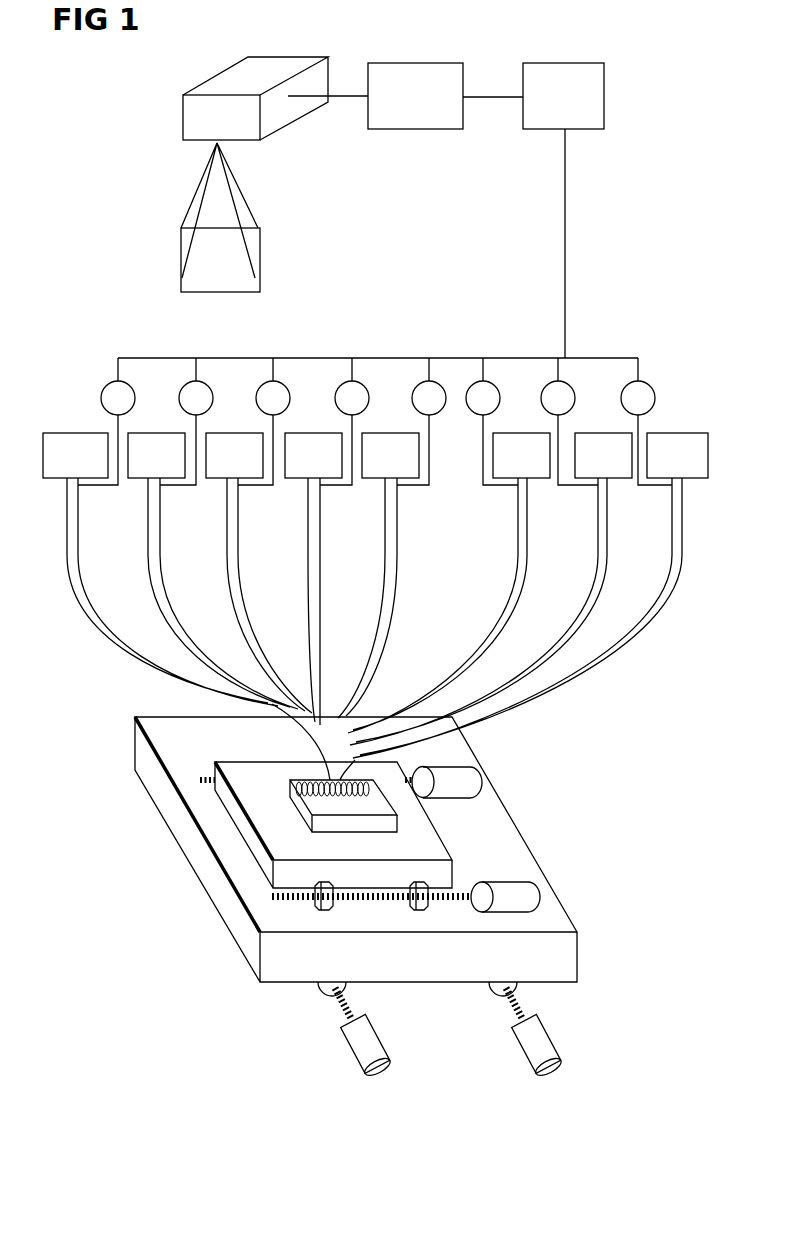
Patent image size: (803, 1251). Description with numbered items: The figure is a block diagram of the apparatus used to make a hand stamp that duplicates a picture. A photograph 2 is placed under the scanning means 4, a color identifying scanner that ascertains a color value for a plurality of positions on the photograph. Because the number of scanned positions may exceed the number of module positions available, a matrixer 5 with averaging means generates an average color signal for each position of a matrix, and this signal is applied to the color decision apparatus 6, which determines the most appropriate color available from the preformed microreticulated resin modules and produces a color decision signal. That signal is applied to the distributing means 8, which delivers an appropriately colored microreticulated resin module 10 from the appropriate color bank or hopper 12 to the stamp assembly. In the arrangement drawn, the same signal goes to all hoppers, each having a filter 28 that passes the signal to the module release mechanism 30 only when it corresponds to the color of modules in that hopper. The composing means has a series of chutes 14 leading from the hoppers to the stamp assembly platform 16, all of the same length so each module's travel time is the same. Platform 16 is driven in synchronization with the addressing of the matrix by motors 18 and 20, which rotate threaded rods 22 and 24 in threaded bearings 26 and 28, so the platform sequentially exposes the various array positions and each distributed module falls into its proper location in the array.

The photograph 2 is at (253, 258).
The scanning means 4 is at (211, 82).
The matrixer 5 is at (457, 70).
The color decision apparatus 6 is at (604, 95).
The distributing means 8 is at (547, 686).
The microreticulated resin module 10 is at (300, 782).
The color bank or hopper 12 is at (677, 433).
The chutes 14 is at (689, 567).
The stamp assembly platform 16 is at (240, 818).
The motor 18 is at (572, 893).
The motor 20 is at (555, 1072).
The threaded rod 22 is at (511, 1012).
The threaded rod 24 is at (272, 895).
The threaded bearing 26 is at (491, 990).
The threaded bearing / filter 28 is at (412, 910).
The module release mechanism 30 is at (695, 497).